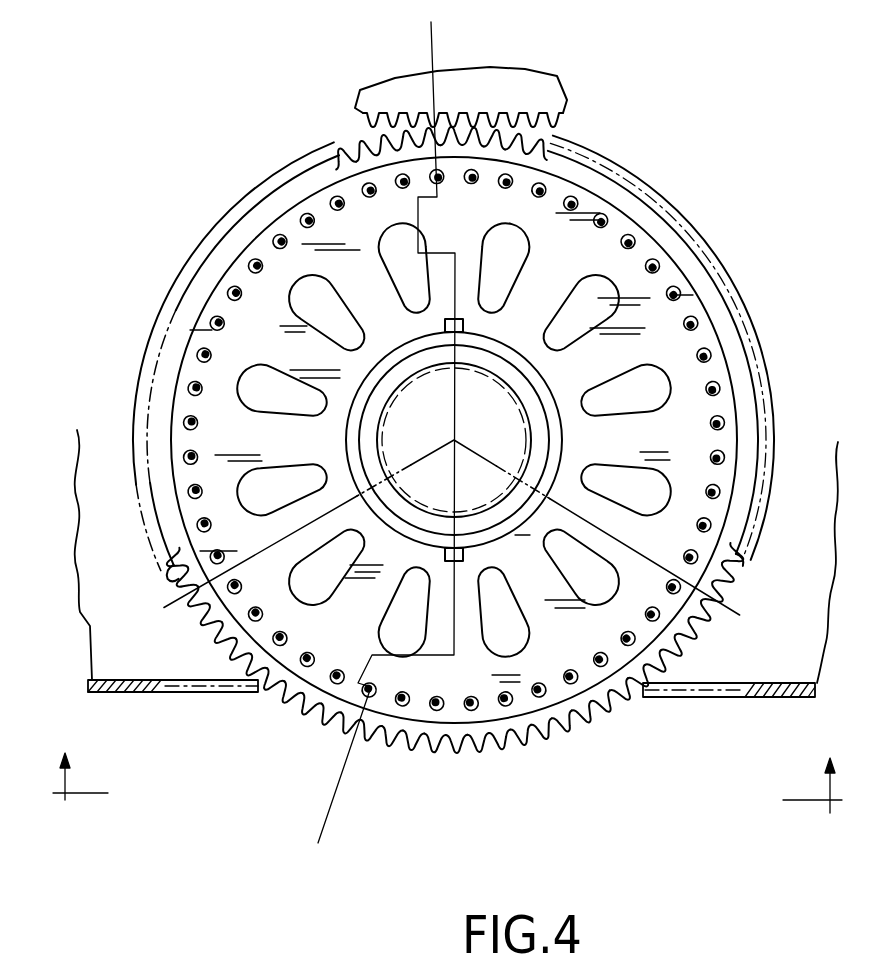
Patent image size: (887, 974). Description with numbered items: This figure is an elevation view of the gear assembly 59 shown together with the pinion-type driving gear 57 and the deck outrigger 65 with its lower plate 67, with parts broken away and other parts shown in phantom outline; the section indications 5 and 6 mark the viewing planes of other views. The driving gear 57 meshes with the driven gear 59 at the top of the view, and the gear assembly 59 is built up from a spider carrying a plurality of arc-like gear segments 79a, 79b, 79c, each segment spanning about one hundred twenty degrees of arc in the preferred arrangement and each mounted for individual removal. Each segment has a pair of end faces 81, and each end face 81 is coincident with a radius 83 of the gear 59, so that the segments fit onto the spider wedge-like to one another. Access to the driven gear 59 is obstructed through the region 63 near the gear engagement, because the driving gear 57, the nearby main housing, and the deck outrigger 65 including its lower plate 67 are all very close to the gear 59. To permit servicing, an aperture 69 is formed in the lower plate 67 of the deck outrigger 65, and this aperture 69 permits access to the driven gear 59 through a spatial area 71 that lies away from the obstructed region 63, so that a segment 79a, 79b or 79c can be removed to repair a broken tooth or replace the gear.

The section line 5- 5 is at (436, 33).
The section line 6- 6 is at (447, 766).
The driving pinion gear 57 is at (572, 112).
The gear assembly 59 is at (726, 221).
The region 63 is at (188, 165).
The deck outrigger 65 is at (80, 622).
The lower plate 67 is at (122, 692).
The aperture 69 is at (249, 716).
The spatial area 71 is at (456, 816).
The arc-like gear segment 79a is at (184, 282).
The arc-like gear segment 79b is at (717, 290).
The arc-like gear segment 79c is at (503, 743).
The end face 81 is at (172, 578).
The radius 83 is at (452, 519).